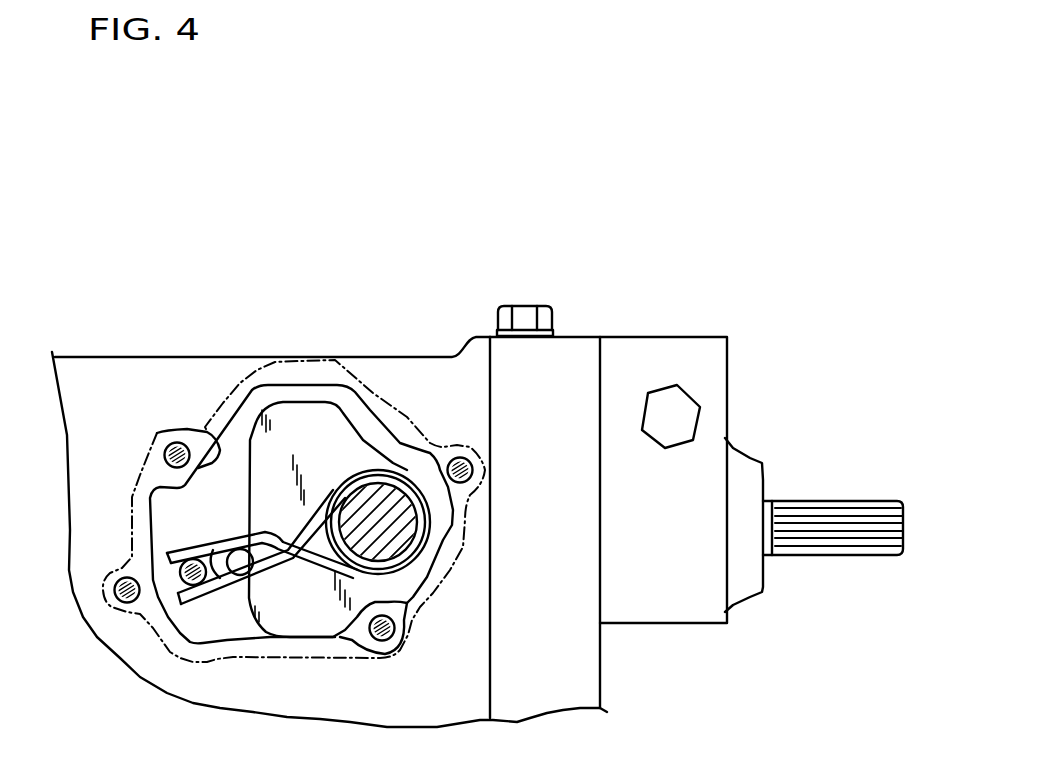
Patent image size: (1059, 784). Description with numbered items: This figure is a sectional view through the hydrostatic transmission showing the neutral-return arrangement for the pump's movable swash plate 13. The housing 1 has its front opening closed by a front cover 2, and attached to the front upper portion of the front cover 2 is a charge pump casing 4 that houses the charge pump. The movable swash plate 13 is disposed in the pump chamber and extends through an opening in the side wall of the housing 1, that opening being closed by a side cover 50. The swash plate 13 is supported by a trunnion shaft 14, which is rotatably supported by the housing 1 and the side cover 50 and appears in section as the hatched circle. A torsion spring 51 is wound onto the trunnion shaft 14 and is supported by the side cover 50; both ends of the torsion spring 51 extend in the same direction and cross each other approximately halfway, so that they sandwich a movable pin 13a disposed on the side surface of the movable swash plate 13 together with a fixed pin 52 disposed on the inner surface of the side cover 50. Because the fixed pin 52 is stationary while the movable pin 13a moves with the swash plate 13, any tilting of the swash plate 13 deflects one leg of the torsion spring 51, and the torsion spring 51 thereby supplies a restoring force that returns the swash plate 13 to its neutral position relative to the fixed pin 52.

The housing 1 is at (250, 357).
The front cover 2 is at (577, 333).
The charge pump casing 4 is at (658, 338).
The movable swash plate 13 is at (247, 450).
The movable pin 13a is at (240, 575).
The trunnion shaft 14 is at (397, 487).
The side cover 50 is at (203, 423).
The torsion spring 51 is at (357, 472).
The fixed pin 52 is at (181, 581).